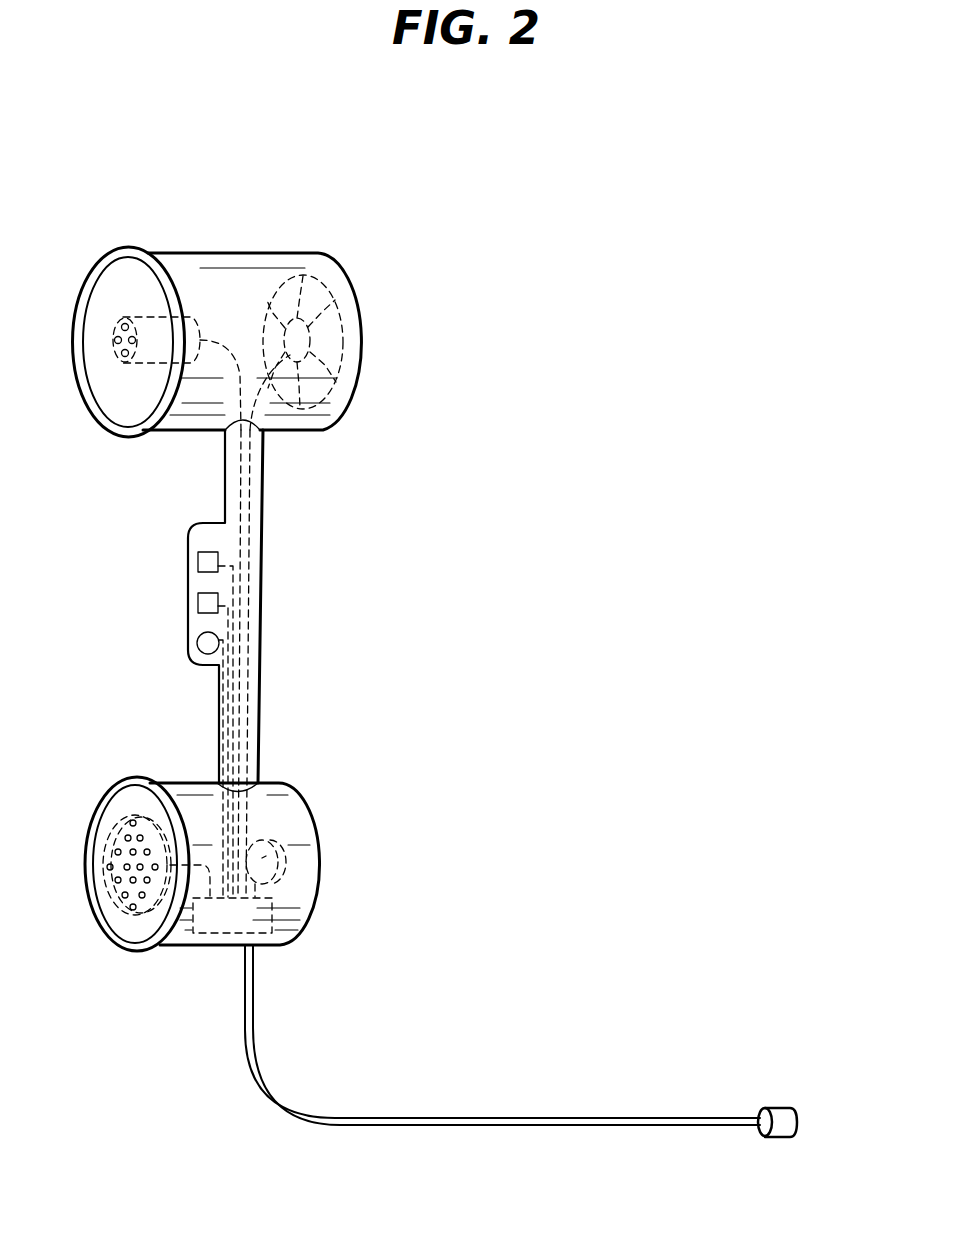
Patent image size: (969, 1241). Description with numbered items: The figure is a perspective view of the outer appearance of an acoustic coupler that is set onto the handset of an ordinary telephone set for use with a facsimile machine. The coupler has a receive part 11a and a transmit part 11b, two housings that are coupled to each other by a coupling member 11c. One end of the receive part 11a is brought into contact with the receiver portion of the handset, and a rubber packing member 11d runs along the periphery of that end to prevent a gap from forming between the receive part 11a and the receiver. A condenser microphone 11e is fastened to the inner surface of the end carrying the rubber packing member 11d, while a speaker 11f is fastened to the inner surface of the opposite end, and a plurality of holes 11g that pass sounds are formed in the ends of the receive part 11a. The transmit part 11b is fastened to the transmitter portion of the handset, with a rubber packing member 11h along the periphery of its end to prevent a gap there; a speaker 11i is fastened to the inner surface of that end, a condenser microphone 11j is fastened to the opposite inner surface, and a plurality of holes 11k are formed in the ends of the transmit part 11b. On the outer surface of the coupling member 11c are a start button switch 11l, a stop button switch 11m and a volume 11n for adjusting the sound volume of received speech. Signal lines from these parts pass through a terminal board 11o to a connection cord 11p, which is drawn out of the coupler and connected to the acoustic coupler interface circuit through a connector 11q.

The receive part 11a is at (362, 380).
The transmit part 11b is at (315, 847).
The coupling member 11c is at (262, 528).
The rubber packing member 11d is at (130, 250).
The condenser microphone 11e is at (192, 315).
The speaker 11f is at (307, 283).
The holes 11g is at (120, 362).
The rubber packing member 11h is at (142, 953).
The speaker 11i is at (122, 910).
The condenser microphone 11j is at (273, 883).
The holes 11k is at (130, 812).
The start button switch 11l is at (218, 562).
The stop button switch 11m is at (218, 603).
The volume 11n is at (219, 640).
The terminal board 11o is at (208, 933).
The connection cord 11p is at (513, 1117).
The connector 11q is at (783, 1108).